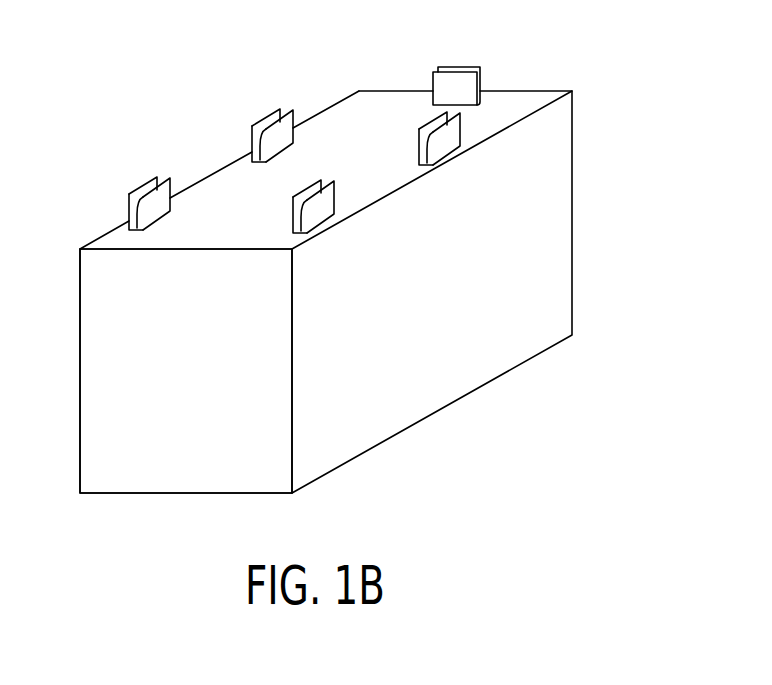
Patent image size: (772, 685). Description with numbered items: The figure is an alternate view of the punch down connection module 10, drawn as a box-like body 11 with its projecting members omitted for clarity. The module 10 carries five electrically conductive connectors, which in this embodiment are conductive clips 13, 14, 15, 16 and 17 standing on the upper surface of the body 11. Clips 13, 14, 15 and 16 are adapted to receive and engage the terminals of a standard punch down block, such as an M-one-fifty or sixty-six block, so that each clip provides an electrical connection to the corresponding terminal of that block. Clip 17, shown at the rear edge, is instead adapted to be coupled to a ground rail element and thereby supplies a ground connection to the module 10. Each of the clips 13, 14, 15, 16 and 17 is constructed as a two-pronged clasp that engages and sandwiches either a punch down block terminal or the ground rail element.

The module 10 is at (521, 423).
The enclosure body 11 is at (96, 387).
The conductive clip 13 is at (128, 193).
The conductive clip 14 is at (320, 215).
The conductive clip 15 is at (255, 128).
The conductive clip 16 is at (447, 142).
The conductive clip 17 is at (455, 70).